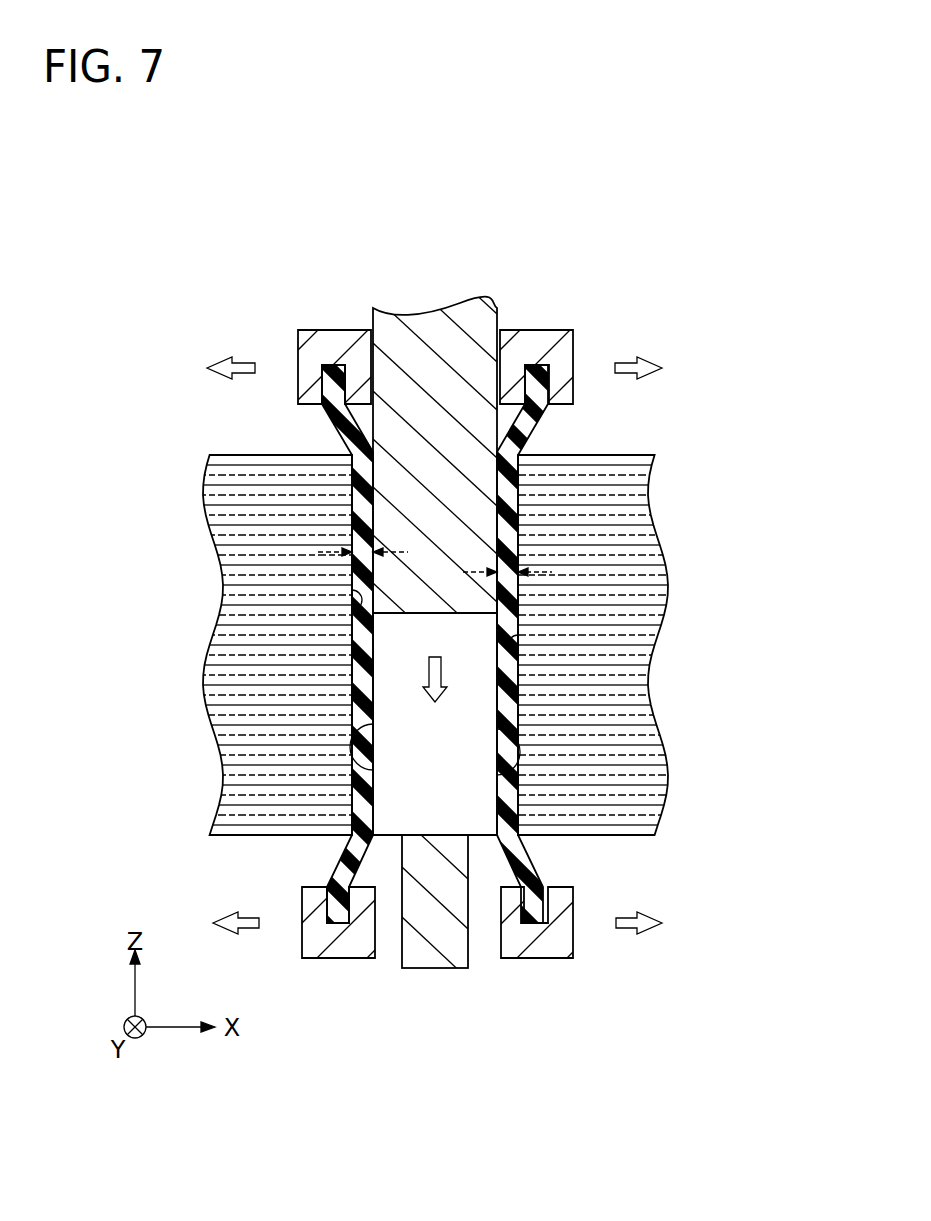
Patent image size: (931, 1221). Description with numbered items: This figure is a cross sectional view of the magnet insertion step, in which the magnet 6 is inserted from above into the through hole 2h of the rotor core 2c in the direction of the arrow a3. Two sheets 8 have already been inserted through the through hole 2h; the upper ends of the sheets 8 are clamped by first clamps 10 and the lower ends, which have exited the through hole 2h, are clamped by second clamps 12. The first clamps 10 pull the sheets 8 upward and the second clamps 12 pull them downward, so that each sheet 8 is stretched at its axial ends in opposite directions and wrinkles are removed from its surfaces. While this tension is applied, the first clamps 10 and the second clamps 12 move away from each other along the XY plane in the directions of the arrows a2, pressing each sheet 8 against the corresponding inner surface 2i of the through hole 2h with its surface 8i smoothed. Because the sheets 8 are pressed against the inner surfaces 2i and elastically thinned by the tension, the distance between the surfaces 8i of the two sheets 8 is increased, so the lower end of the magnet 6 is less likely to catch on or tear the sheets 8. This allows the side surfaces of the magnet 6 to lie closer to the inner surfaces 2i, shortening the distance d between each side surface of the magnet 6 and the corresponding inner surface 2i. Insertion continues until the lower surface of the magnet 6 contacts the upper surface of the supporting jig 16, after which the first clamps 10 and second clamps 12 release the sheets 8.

The rotor core 2c is at (215, 507).
The through hole 2h is at (433, 642).
The inner surface 2i is at (358, 600).
The magnet 6 is at (430, 322).
The sheet 8 is at (360, 498).
The surface 8i is at (385, 765).
The first clamp 10 is at (333, 348).
The second clamp 12 is at (322, 960).
The supporting jig 16 is at (425, 960).
The distance d is at (352, 552).
The arrow a2 is at (243, 366).
The arrow a3 is at (437, 668).